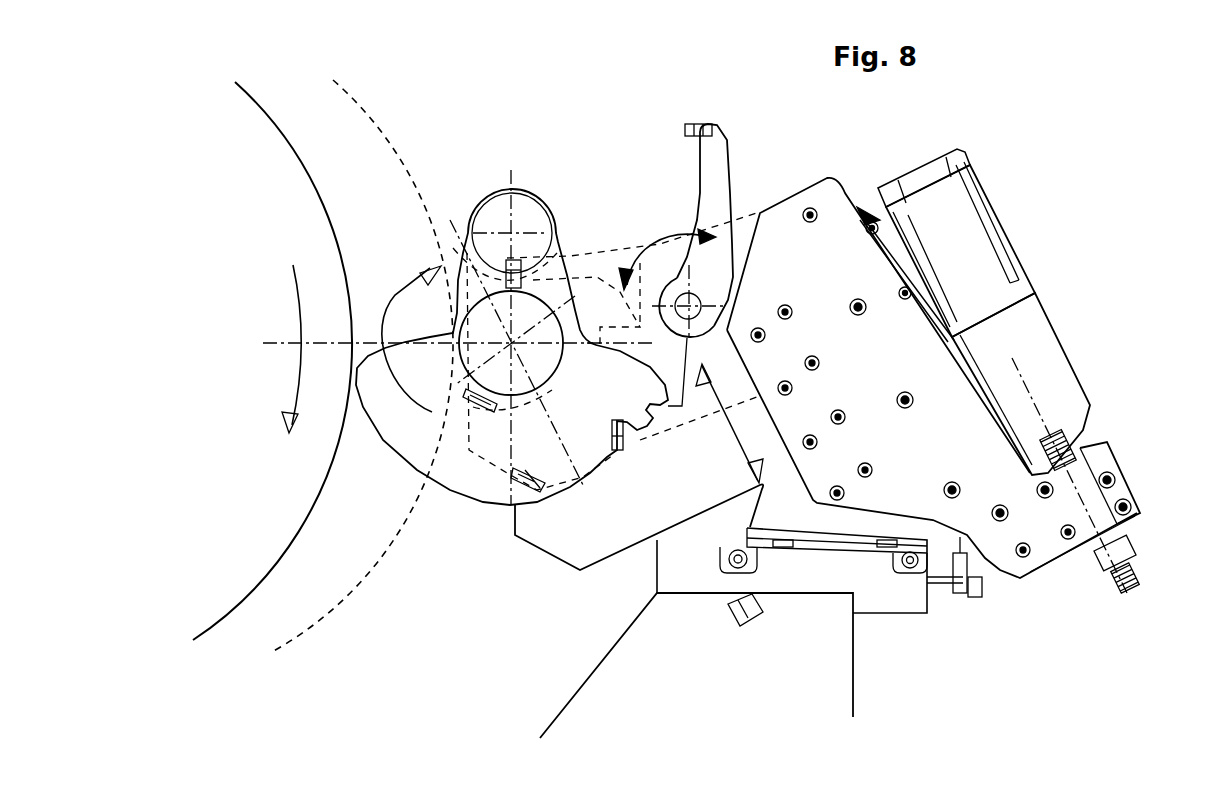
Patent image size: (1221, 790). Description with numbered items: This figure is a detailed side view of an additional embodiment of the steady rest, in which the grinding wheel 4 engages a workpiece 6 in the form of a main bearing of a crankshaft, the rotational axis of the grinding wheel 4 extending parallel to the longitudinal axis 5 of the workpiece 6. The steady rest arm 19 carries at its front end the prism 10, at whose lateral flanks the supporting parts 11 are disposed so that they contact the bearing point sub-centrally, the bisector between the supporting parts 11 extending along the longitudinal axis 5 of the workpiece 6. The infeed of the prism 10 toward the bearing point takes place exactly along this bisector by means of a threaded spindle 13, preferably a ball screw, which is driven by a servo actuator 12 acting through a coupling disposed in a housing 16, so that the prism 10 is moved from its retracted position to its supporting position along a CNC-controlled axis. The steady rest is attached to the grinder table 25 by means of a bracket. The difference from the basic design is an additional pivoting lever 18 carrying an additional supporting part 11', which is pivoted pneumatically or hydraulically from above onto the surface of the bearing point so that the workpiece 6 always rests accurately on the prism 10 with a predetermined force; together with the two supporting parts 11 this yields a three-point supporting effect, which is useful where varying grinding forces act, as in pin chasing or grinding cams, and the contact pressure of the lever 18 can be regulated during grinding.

The grinding wheel 4 is at (320, 188).
The longitudinal axis of the workpiece 5 is at (568, 262).
The workpiece 6 is at (450, 283).
The prism 10 is at (585, 495).
The supporting parts 11 is at (574, 490).
The additional supporting part 11' is at (668, 100).
The servo actuator 12 is at (973, 263).
The threaded spindle 13 is at (1143, 567).
The housing 16 is at (1045, 373).
The pivoting lever 18 is at (718, 190).
The steady rest arm 19 is at (618, 532).
The grinder table 25 is at (810, 605).